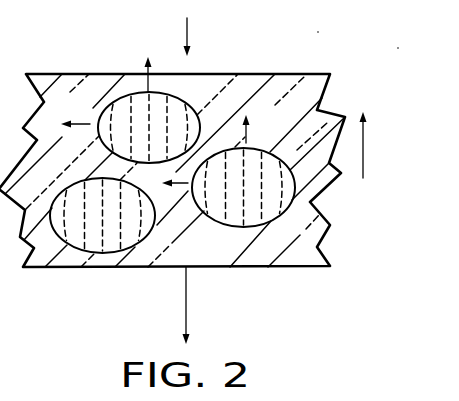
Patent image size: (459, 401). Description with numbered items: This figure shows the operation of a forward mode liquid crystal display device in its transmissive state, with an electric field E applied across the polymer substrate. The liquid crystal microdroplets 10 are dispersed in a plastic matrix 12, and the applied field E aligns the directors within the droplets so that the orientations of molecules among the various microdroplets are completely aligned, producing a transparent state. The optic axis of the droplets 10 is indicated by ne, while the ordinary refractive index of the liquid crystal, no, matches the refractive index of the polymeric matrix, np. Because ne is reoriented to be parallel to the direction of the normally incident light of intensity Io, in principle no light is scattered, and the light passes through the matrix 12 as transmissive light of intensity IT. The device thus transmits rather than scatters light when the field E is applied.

The liquid crystal microdroplets 10 is at (113, 101).
The plastic matrix 12 is at (292, 74).
The incident light intensity Io is at (189, 27).
The transmissive light intensity IT is at (187, 299).
The optic axis of the droplets ne is at (208, 100).
The ordinary refractive index of the liquid crystal no is at (118, 151).
The refractive index of the polymeric matrix np is at (284, 239).
The applied electric field E is at (364, 82).